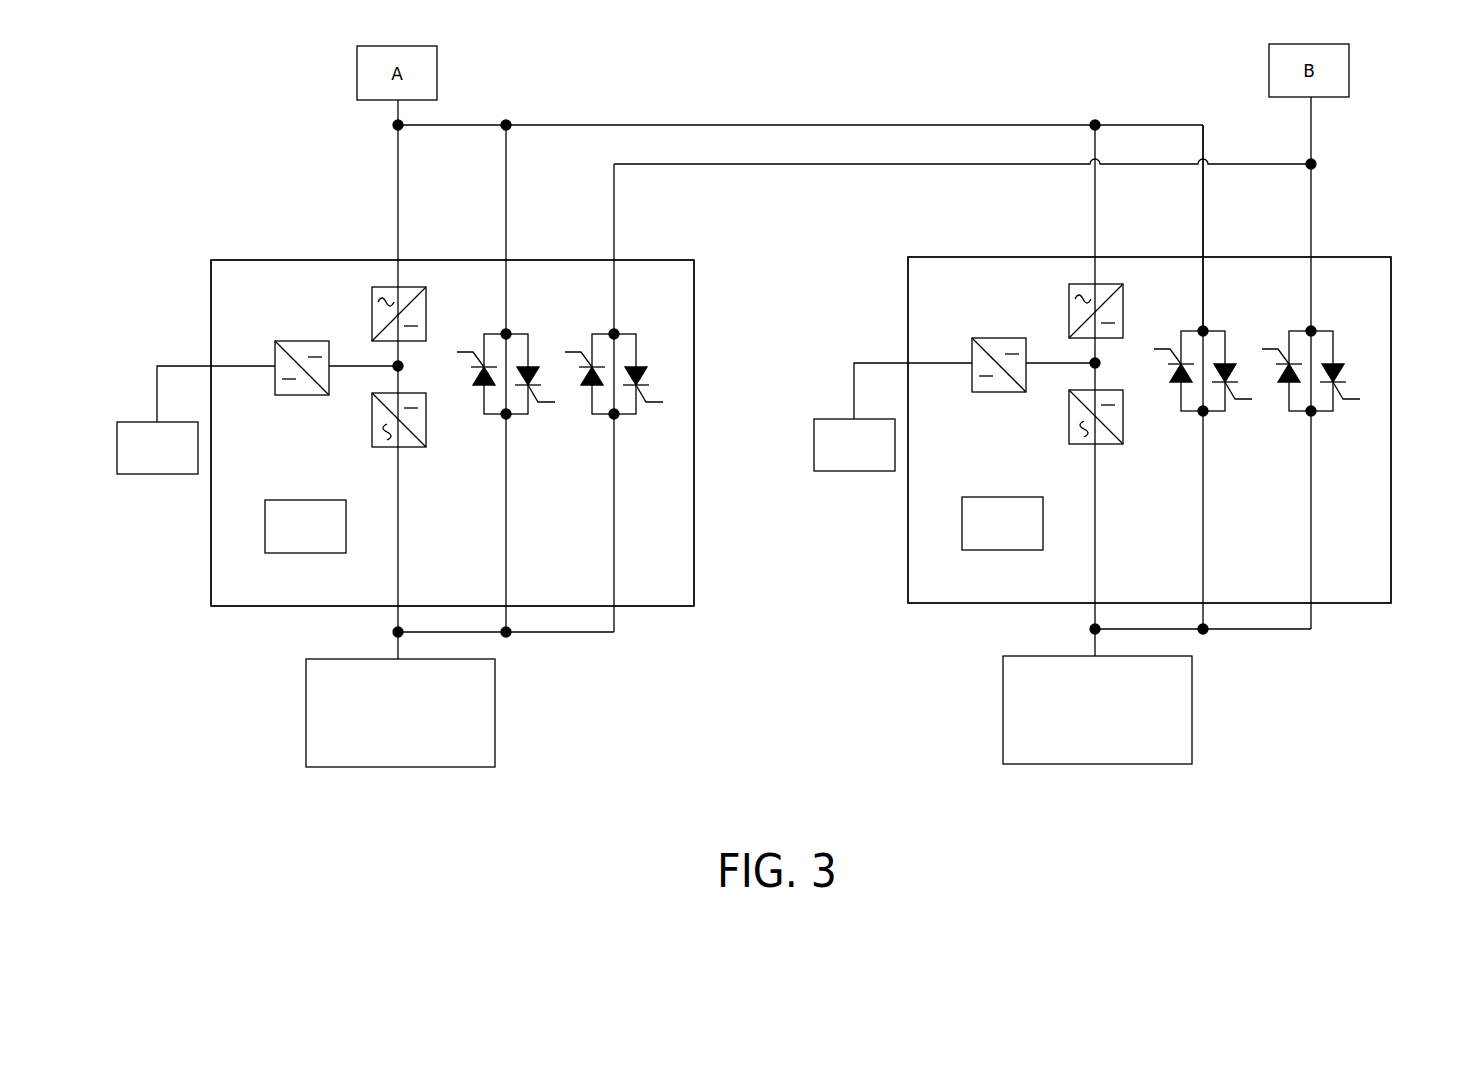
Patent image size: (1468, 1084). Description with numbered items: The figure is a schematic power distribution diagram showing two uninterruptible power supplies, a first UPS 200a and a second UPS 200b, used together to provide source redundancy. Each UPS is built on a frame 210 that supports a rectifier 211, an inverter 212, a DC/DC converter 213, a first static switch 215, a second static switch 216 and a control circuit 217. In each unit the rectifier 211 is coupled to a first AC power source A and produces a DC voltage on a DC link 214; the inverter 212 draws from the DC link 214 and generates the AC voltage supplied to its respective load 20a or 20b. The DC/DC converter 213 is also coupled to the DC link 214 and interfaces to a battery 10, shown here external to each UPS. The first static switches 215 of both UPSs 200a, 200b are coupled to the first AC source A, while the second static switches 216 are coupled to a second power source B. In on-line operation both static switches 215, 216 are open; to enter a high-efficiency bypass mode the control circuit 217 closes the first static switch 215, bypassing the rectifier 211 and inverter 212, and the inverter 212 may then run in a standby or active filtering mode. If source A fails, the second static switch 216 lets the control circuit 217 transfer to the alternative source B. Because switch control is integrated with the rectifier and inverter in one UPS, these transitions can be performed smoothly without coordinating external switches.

The battery 10 is at (117, 447).
The load 20a is at (400, 767).
The load 20b is at (1097, 764).
The first UPS 200a is at (713, 243).
The second UPS 200b is at (1355, 229).
The frame 210 is at (694, 430).
The rectifier 211 is at (372, 313).
The inverter 212 is at (372, 420).
The DC/DC converter 213 is at (300, 395).
The DC link 214 is at (402, 353).
The first static switch 215 is at (492, 457).
The second static switch 216 is at (601, 445).
The control circuit 217 is at (305, 553).